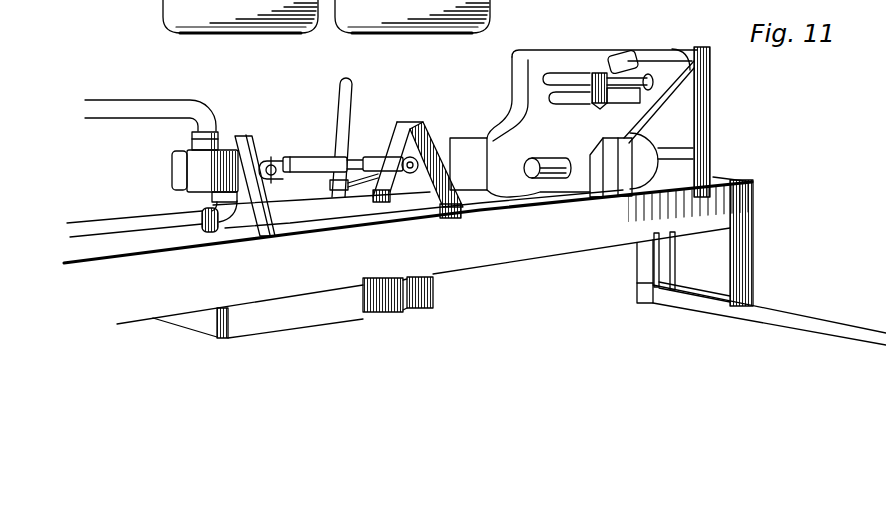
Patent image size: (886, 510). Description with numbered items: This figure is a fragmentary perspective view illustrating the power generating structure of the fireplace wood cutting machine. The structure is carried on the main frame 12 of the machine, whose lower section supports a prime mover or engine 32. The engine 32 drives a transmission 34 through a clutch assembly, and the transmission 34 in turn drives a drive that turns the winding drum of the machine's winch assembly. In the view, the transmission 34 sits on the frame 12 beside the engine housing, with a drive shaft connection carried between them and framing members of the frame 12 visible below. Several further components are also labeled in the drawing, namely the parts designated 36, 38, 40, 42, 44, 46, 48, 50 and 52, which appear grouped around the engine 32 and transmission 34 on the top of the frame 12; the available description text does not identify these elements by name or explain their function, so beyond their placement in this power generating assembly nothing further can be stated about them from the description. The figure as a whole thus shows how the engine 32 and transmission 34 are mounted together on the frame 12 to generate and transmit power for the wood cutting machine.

The main frame 12 is at (558, 228).
The prime mover or engine 32 is at (553, 61).
The transmission 34 is at (463, 137).
The hydraulic cylinder 36 is at (318, 157).
The clevis 38 is at (268, 157).
The control valve 40 is at (173, 158).
The control lever 42 is at (352, 96).
The support bracket 44 is at (332, 306).
The pipe fitting 46 is at (214, 130).
The supply pipe 48 is at (160, 103).
The hose clamp 50 is at (205, 212).
The return pipe 52 is at (123, 228).